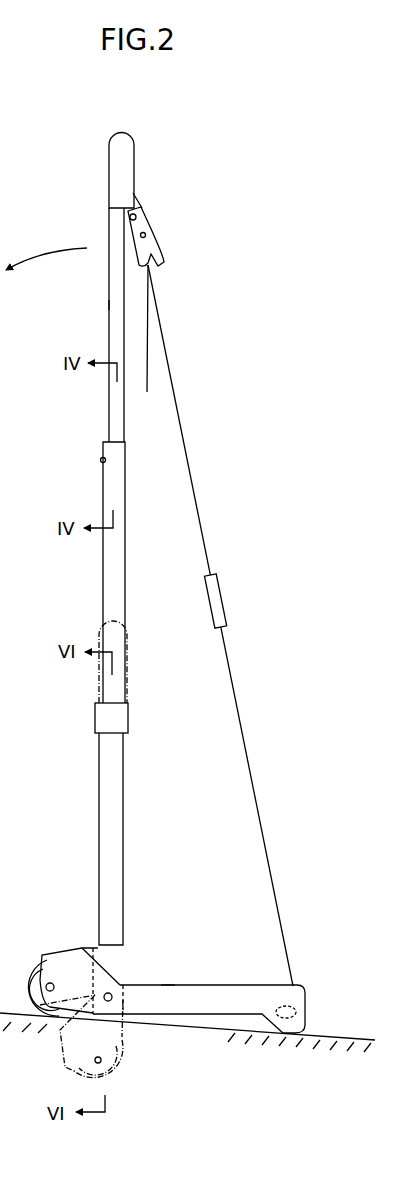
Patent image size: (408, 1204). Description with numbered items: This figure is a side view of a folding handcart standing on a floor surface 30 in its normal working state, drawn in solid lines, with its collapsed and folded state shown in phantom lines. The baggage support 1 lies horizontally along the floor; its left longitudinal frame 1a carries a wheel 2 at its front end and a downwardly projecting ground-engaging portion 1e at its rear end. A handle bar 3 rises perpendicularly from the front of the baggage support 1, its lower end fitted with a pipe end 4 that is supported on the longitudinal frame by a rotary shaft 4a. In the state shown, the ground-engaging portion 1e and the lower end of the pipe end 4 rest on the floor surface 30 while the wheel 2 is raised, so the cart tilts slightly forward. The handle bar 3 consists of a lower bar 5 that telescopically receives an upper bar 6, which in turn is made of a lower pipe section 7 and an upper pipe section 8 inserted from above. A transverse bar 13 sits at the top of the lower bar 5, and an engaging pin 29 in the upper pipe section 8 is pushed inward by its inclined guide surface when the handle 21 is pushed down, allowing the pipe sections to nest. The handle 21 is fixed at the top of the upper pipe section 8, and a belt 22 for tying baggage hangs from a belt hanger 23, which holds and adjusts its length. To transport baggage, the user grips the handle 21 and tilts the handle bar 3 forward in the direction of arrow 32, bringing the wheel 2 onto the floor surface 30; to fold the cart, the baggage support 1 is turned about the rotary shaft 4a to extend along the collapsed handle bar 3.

The baggage support 1 is at (217, 984).
The left longitudinal frame 1a is at (161, 985).
The ground-engaging portion 1e is at (305, 1015).
The wheel 2 is at (30, 1018).
The handle bar 3 is at (74, 681).
The pipe end 4 is at (131, 960).
The rotary shaft 4a is at (110, 1002).
The lower bar 5 is at (100, 778).
The upper bar 6 is at (99, 398).
The lower pipe section 7 is at (104, 494).
The upper pipe section 8 is at (109, 304).
The transverse bar 13 is at (89, 720).
The handle 21 is at (123, 133).
The belt 22 is at (165, 338).
The belt hanger 23 is at (141, 203).
The engaging pin 29 is at (100, 460).
The floor surface 30 is at (340, 1037).
The arrow 32 is at (37, 253).